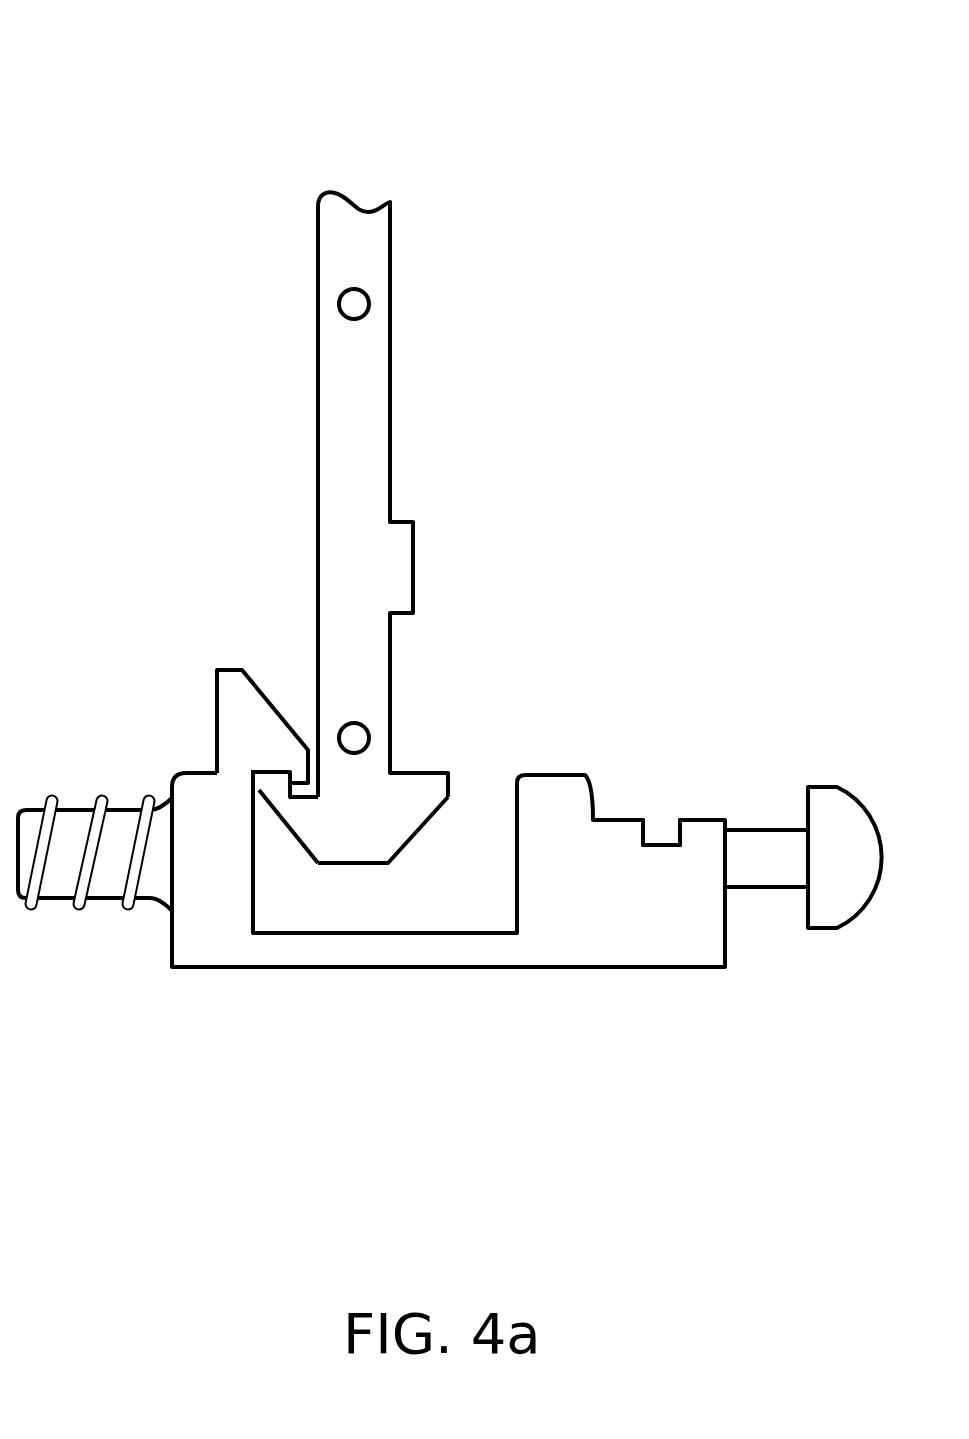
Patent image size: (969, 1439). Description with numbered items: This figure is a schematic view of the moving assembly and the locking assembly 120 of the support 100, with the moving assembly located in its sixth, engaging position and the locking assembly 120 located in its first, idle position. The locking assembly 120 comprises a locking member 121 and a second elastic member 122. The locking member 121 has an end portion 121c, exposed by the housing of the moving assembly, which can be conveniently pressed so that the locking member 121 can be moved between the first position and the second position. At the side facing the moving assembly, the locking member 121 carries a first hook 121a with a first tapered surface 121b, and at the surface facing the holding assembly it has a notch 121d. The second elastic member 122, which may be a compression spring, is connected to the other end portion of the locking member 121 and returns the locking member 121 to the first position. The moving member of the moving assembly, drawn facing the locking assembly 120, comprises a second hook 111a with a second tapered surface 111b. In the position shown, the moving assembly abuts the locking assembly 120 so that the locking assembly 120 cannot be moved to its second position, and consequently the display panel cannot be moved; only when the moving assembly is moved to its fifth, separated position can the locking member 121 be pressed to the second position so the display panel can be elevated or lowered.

The support 100 is at (113, 36).
The second hook 111a is at (275, 783).
The second tapered surface 111b is at (287, 832).
The locking assembly 120 is at (190, 588).
The locking member 121 is at (454, 782).
The first hook 121a is at (303, 773).
The first tapered surface 121b is at (282, 712).
The end portion 121c is at (837, 787).
The notch 121d is at (660, 837).
The second elastic member 122 is at (52, 795).